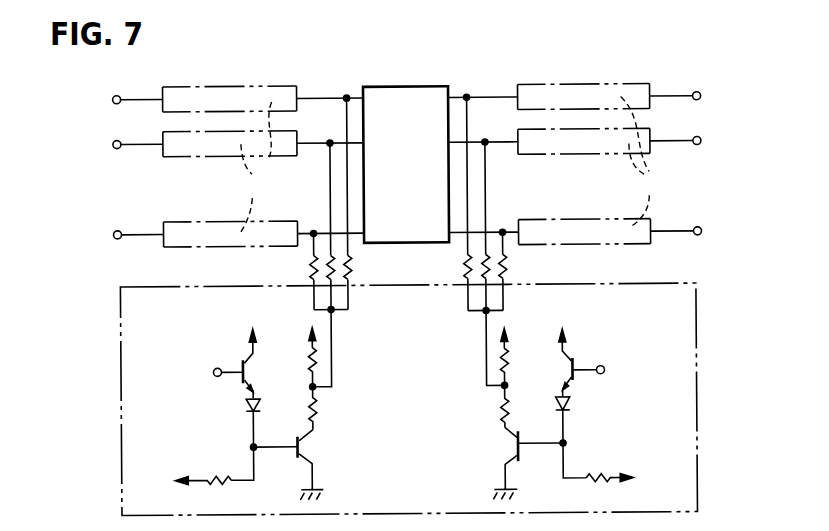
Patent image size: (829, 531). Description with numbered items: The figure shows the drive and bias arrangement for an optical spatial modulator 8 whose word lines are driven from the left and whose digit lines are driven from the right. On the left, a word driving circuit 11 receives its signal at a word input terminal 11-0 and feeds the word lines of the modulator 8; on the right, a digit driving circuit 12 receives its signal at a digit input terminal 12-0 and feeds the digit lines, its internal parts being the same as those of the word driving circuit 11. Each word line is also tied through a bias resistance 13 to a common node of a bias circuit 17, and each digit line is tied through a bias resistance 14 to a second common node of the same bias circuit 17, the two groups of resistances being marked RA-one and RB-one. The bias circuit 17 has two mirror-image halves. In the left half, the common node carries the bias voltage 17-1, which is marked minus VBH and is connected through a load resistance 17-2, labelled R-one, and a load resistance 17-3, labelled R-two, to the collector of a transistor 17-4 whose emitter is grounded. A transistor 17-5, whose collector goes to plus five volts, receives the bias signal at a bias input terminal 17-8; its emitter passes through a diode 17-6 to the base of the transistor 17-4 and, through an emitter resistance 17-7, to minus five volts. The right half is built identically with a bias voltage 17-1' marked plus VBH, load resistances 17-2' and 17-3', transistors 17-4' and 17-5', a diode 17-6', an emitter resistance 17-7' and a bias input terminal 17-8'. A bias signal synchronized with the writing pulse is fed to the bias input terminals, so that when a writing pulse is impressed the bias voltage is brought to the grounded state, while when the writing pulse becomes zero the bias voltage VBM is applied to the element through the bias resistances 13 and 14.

The optical spatial modulator 8 is at (414, 86).
The word driving circuit 11 is at (177, 86).
The word input terminal 11-0 is at (112, 101).
The digit driving circuit 12 is at (590, 84).
The digit input terminal 12-0 is at (701, 96).
The bias resistance 13 is at (323, 240).
The bias resistance 14 is at (493, 242).
The bias circuit 17 is at (536, 285).
The bias voltage 17-1 is at (320, 341).
The load resistance 17-2 is at (332, 357).
The load resistance 17-3 is at (328, 408).
The transistor 17-4 is at (311, 464).
The transistor 17-5 is at (215, 362).
The diode 17-6 is at (217, 425).
The emitter resistance 17-7 is at (193, 469).
The bias input terminal 17-8 is at (196, 373).
The bias voltage 17-1' is at (506, 339).
The load resistance 17-2' is at (482, 357).
The load resistance 17-3' is at (488, 409).
The transistor 17-4' is at (493, 463).
The transistor 17-5' is at (599, 353).
The diode 17-6' is at (600, 419).
The emitter resistance 17-7' is at (616, 460).
The bias input terminal 17-8' is at (616, 370).